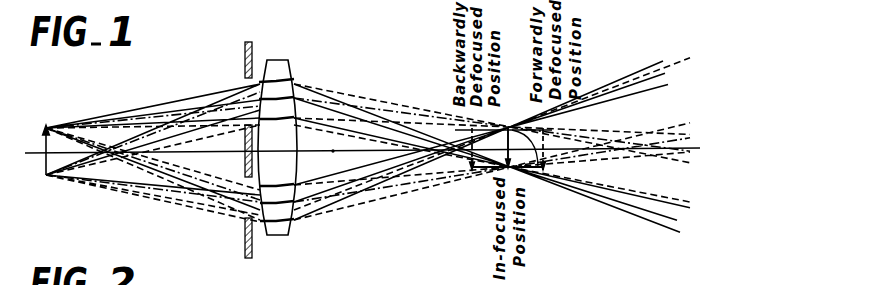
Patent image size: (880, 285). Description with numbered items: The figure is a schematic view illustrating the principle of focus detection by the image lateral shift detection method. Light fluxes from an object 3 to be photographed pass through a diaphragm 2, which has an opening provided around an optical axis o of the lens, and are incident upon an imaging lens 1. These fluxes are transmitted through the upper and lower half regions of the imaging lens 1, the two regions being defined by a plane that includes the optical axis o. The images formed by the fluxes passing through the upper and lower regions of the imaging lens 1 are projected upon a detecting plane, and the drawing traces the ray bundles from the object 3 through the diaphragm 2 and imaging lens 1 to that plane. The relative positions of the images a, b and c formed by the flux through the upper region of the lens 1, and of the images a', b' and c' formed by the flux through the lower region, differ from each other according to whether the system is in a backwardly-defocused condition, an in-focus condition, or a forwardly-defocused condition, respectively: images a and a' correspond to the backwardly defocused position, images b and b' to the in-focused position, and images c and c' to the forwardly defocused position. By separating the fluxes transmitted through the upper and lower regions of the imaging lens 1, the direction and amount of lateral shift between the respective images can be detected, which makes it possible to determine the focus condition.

The imaging lens 1 is at (296, 70).
The diaphragm 2 is at (245, 60).
The object 3 is at (46, 161).
The optical axis o is at (333, 152).
The image in backwardly-defocused condition (upper region) a is at (456, 171).
The image in backwardly-defocused condition (lower region) a' is at (449, 117).
The image in in-focus condition (upper region) b is at (541, 175).
The image in in-focus condition (lower region) b' is at (512, 117).
The image in forwardly-defocused condition (upper region) c is at (576, 158).
The image in forwardly-defocused condition (lower region) c' is at (579, 139).